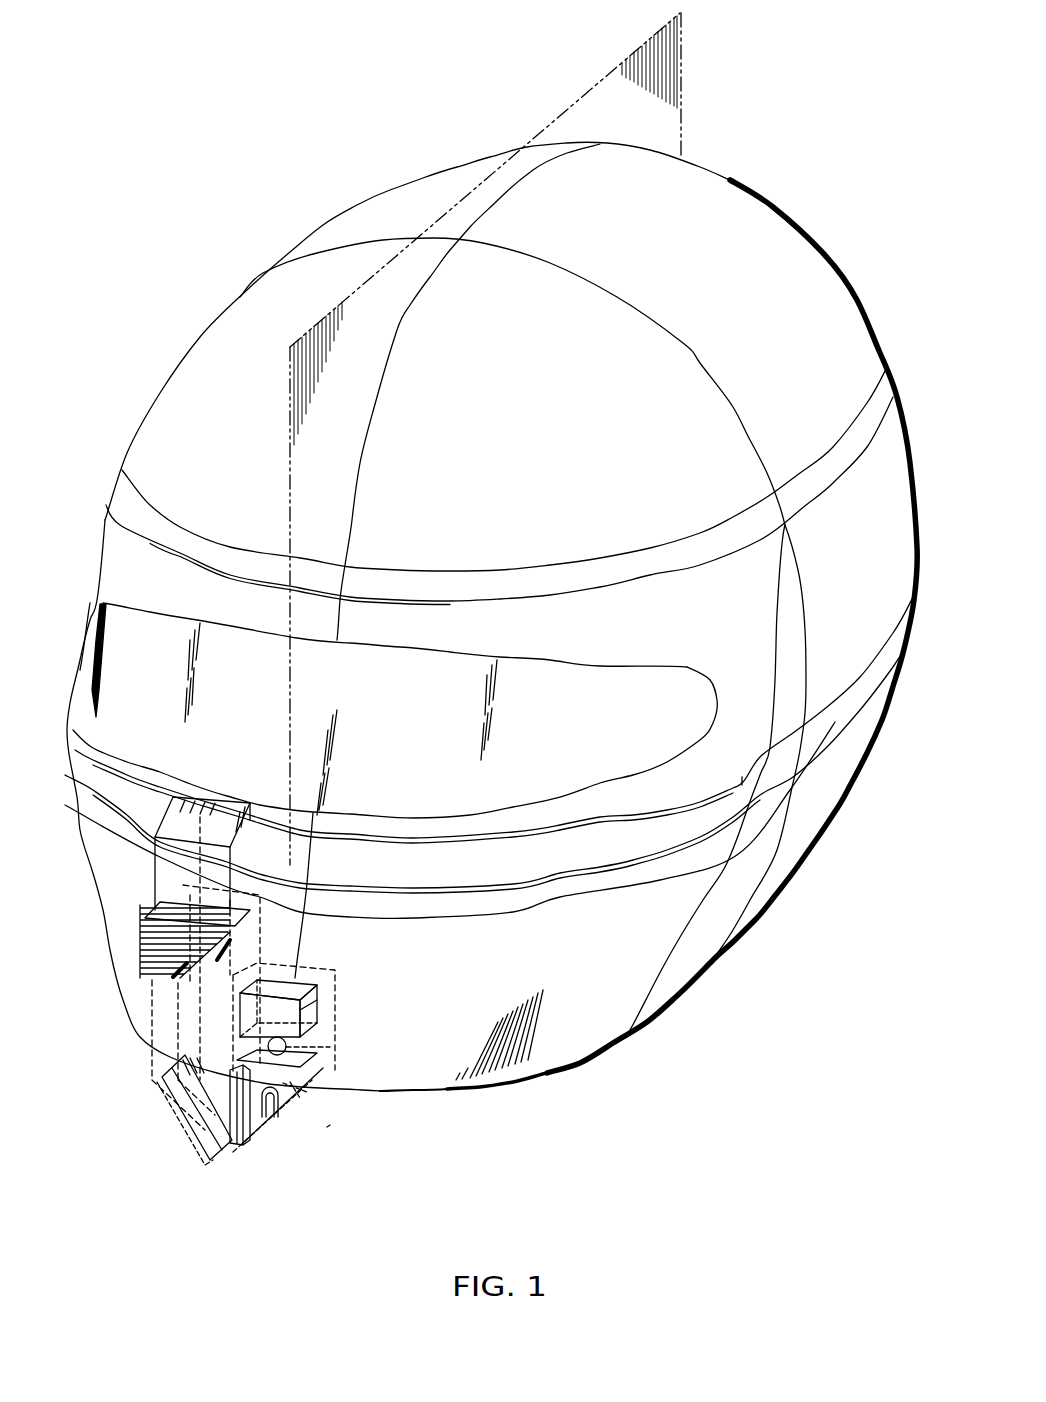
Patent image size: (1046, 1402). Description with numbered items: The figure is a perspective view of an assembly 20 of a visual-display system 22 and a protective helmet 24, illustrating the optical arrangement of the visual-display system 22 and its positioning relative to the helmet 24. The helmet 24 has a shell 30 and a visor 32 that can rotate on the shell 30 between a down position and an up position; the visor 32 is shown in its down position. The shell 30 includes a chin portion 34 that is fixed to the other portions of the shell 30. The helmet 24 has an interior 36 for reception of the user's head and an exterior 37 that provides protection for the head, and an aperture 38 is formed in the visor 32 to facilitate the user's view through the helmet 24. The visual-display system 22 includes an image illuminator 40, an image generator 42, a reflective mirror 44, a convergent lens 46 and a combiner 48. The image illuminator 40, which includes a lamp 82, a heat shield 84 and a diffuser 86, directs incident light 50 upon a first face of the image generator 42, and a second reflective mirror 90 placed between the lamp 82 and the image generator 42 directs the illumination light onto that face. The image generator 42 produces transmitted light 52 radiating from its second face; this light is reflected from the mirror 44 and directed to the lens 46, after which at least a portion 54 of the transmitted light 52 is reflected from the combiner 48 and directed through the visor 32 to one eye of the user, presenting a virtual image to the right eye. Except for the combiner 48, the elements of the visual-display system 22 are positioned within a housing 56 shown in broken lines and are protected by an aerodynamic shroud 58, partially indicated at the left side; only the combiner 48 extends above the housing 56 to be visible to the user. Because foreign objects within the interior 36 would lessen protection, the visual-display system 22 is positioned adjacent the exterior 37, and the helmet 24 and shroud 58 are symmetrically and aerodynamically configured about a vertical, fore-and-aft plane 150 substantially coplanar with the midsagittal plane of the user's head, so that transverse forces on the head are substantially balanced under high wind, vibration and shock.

The assembly 20 is at (628, 990).
The visual-display system 22 is at (327, 1127).
The helmet 24 is at (447, 1090).
The shell 30 is at (178, 366).
The visor 32 is at (500, 723).
The chin portion 34 is at (523, 1053).
The interior 36 is at (102, 646).
The exterior 37 is at (98, 588).
The aperture 38 is at (402, 812).
The image illuminator 40 is at (320, 997).
The image generator 42 is at (222, 1145).
The reflective mirror 44 is at (325, 1007).
The convergent lens 46 is at (296, 930).
The combiner 48 is at (187, 820).
The incident light 50 is at (270, 1128).
The transmitted light 52 is at (259, 980).
The portion of the transmitted light 54 is at (278, 745).
The housing 56 is at (153, 1057).
The aerodynamic shroud 58 is at (140, 940).
The lamp 82 is at (330, 1048).
The heat shield 84 is at (320, 1083).
The diffuser 86 is at (265, 1120).
The second reflective mirror 90 is at (283, 1083).
The vertical, fore-and-aft plane 150 is at (666, 53).